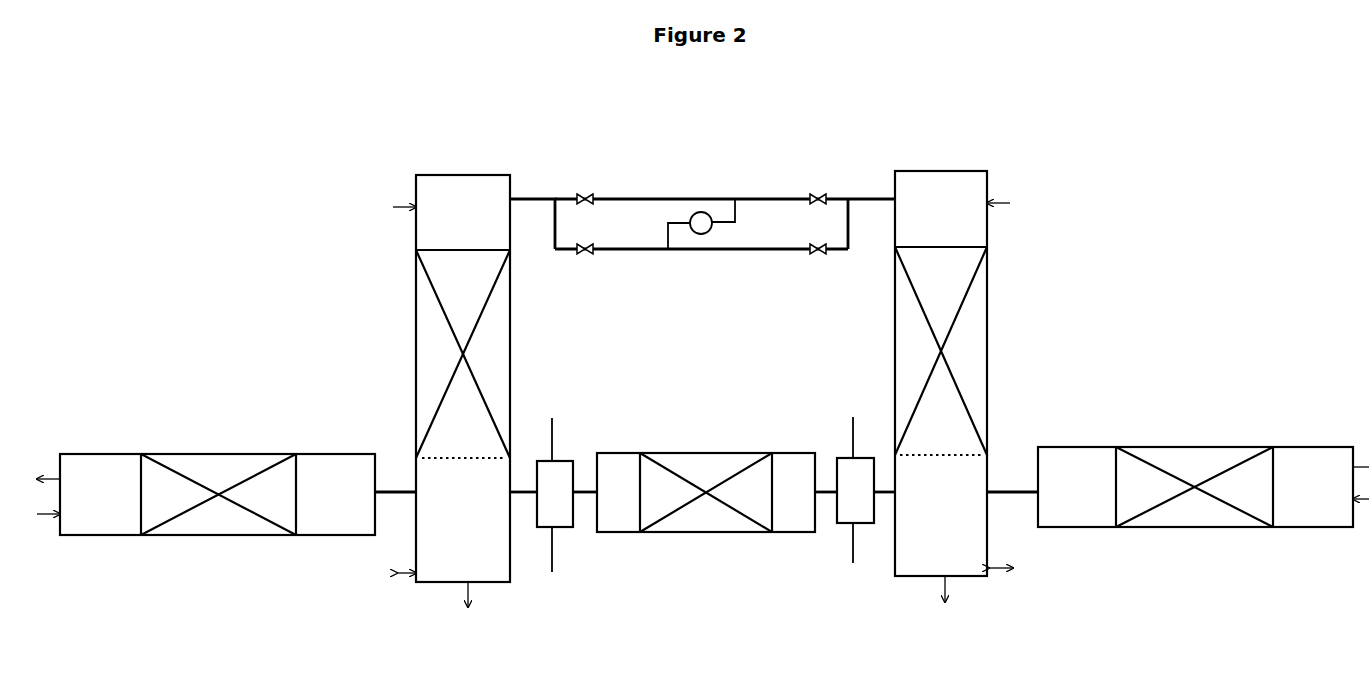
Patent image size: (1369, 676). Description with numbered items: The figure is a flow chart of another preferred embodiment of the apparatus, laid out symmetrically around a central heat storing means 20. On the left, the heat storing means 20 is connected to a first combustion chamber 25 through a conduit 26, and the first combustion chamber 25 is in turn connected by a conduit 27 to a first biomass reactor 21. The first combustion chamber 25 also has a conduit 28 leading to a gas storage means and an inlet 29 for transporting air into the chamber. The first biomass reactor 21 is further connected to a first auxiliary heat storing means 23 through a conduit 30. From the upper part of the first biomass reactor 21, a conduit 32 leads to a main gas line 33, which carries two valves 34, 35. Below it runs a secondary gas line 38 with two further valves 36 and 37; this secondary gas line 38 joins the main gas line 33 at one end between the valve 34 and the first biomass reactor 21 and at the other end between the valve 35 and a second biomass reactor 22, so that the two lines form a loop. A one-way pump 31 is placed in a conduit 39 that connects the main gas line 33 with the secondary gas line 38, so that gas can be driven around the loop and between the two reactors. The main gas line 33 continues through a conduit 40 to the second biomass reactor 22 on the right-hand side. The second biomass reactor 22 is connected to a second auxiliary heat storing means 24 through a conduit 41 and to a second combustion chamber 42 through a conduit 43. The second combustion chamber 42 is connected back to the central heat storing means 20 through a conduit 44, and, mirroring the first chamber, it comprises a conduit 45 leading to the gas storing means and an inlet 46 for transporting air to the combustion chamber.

The heat storing means 20 is at (707, 523).
The first biomass reactor 21 is at (432, 345).
The second biomass reactor 22 is at (975, 357).
The first auxiliary heat storing means 23 is at (217, 535).
The second auxiliary heat storing means 24 is at (1192, 518).
The first combustion chamber 25 is at (565, 518).
The conduit 26 is at (583, 483).
The conduit 27 is at (520, 490).
The conduit 28 is at (555, 550).
The inlet 29 is at (555, 422).
The conduit 30 is at (392, 490).
The one-way pump 31 is at (717, 232).
The conduit 32 is at (528, 195).
The main gas line 33 is at (672, 194).
The valve 34 is at (595, 192).
The valve 35 is at (835, 175).
The valve 36 is at (593, 253).
The valve 37 is at (823, 252).
The secondary gas line 38 is at (760, 250).
The conduit 39 is at (725, 195).
The conduit 40 is at (873, 195).
The conduit 41 is at (1015, 488).
The second combustion chamber 42 is at (850, 505).
The conduit 43 is at (885, 482).
The conduit 44 is at (827, 482).
The conduit 45 is at (855, 548).
The inlet 46 is at (852, 432).